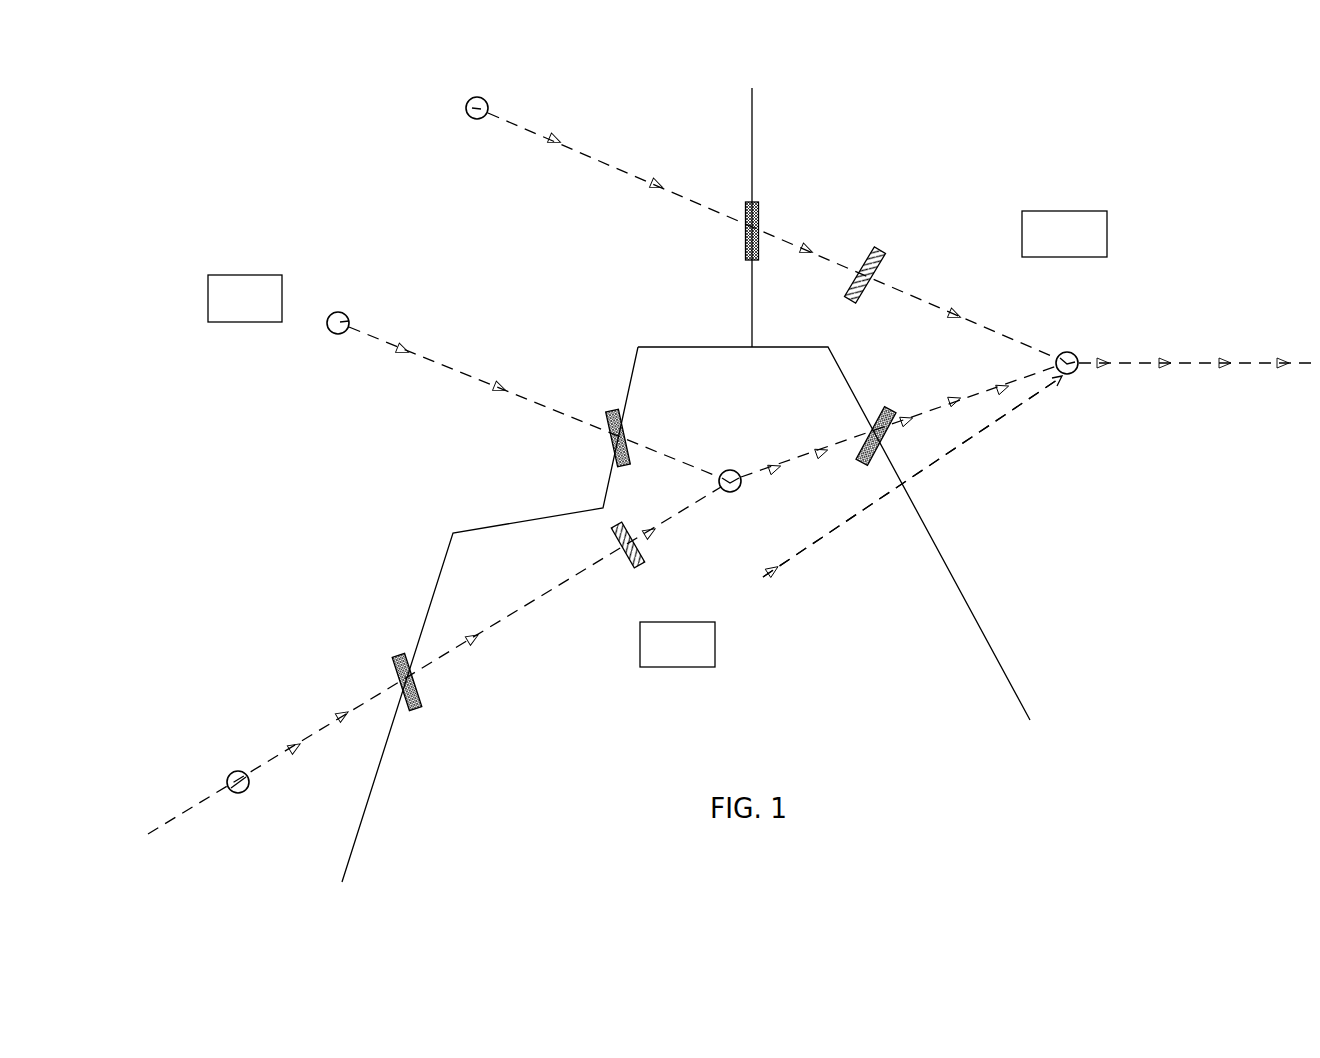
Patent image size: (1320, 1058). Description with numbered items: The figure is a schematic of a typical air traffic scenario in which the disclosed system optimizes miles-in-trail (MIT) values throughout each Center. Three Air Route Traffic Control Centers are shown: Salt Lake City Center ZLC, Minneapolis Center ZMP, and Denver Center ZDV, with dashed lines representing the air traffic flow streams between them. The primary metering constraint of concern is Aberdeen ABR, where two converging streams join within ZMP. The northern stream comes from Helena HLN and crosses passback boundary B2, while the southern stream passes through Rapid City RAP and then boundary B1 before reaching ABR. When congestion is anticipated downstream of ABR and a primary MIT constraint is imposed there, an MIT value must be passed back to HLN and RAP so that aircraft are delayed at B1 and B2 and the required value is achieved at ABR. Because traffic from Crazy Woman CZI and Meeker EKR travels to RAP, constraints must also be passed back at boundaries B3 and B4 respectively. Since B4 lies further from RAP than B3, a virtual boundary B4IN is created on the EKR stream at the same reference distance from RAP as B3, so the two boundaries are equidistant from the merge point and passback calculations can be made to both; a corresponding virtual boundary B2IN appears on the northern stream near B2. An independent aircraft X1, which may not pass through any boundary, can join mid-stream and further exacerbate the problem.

The Helena fix HLN is at (460, 95).
The Crazy Woman fix CZI is at (328, 310).
The Meeker fix EKR is at (271, 782).
The Rapid City fix RAP is at (732, 467).
The Aberdeen primary metering constraint ABR is at (1072, 348).
The passback boundary B2 is at (769, 214).
The passback boundary B3 is at (635, 432).
The passback boundary B1 is at (891, 436).
The passback boundary B4 is at (402, 664).
The virtual boundary B2IN is at (876, 261).
The virtual boundary B4IN is at (647, 563).
The independent aircraft X1 is at (893, 492).
The Salt Lake City Center ZLC is at (245, 298).
The Minneapolis Center ZMP is at (1064, 234).
The Denver Center ZDV is at (677, 644).